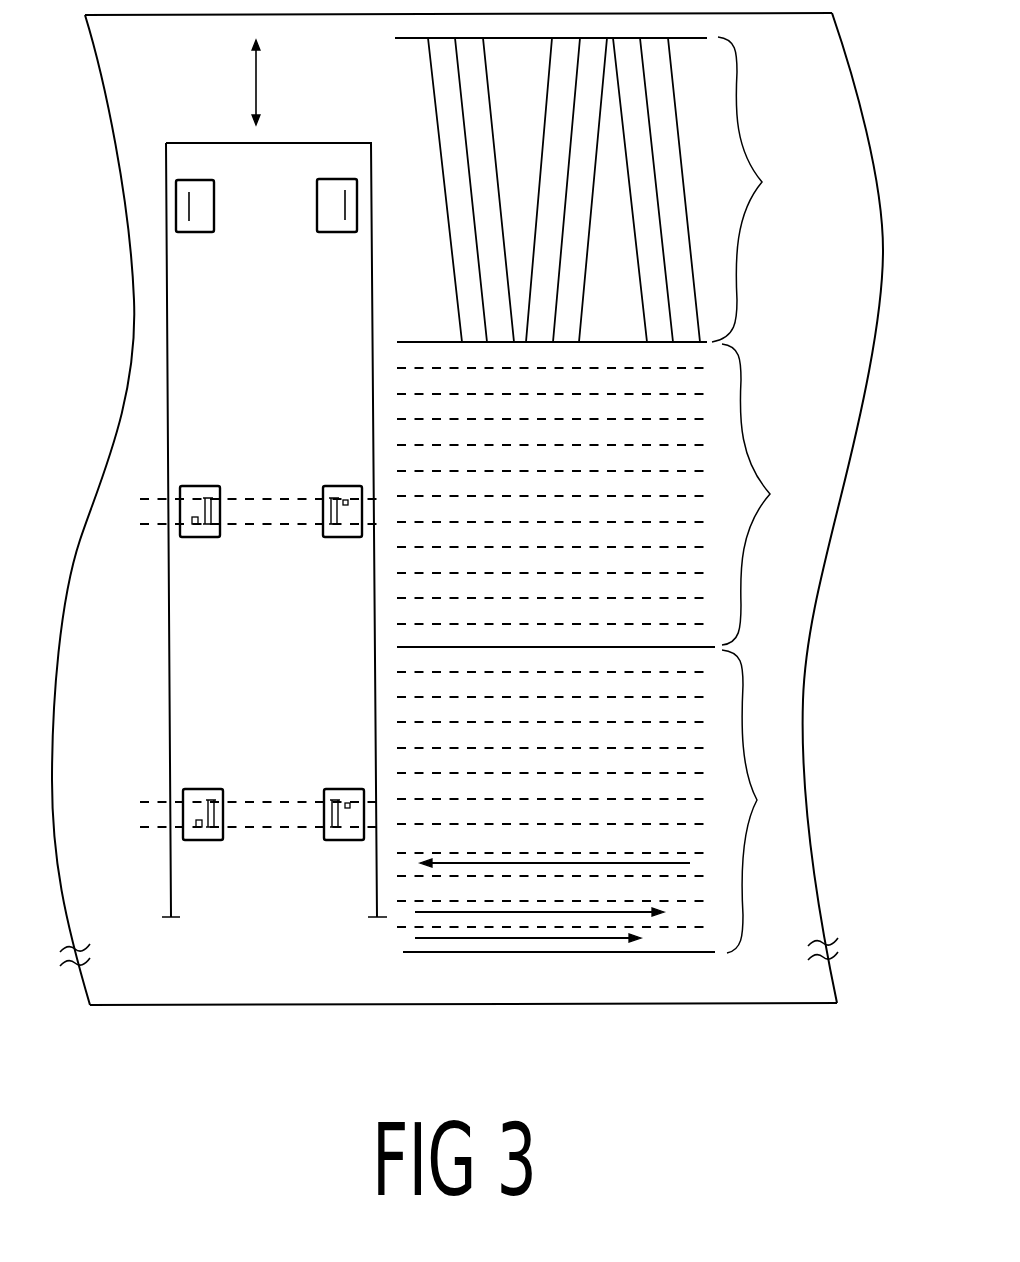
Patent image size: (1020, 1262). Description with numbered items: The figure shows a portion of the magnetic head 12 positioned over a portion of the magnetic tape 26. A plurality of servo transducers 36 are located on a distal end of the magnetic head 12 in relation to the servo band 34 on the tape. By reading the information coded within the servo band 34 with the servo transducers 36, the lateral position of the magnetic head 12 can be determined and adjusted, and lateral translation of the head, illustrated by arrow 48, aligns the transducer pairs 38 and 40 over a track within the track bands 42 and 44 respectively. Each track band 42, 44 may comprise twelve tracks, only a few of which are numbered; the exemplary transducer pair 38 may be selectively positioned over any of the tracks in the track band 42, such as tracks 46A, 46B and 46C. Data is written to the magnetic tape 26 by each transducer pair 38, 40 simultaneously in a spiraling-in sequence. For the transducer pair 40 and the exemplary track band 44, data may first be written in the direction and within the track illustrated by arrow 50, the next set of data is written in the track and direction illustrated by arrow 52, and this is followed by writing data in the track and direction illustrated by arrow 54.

The magnetic head 12 is at (289, 656).
The magnetic tape 26 is at (103, 71).
The servo band 34 is at (762, 182).
The servo transducers 36 is at (190, 232).
The transducer pair 38 is at (204, 486).
The transducer pair 40 is at (203, 789).
The track band 42 is at (597, 495).
The track band 44 is at (590, 801).
The track 46A is at (689, 513).
The track 46B is at (672, 540).
The track 46C is at (688, 484).
The arrow 48 is at (258, 86).
The arrow 50 is at (526, 939).
The arrow 52 is at (690, 863).
The arrow 54 is at (643, 913).